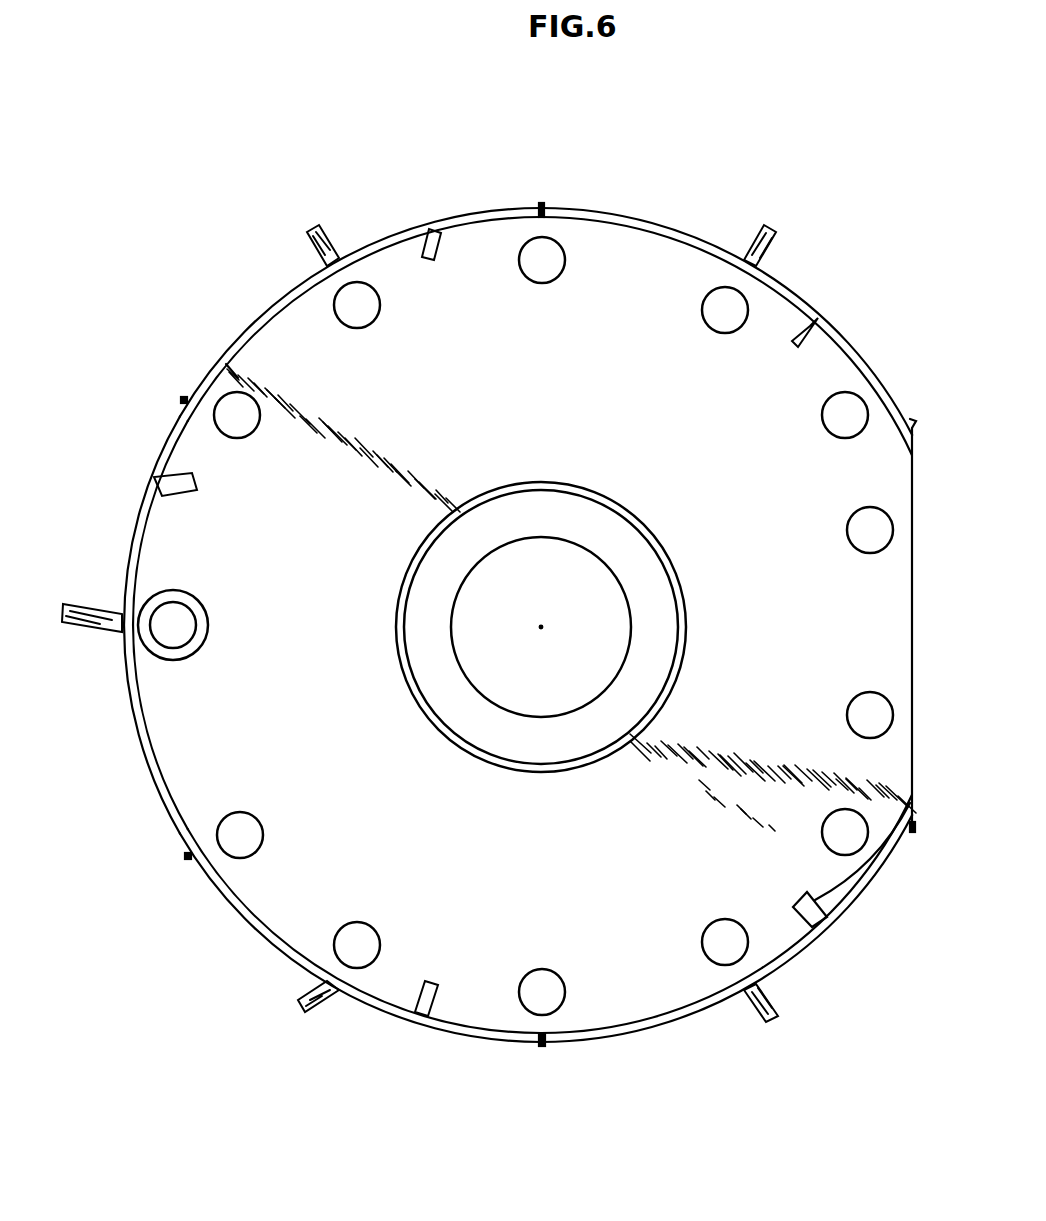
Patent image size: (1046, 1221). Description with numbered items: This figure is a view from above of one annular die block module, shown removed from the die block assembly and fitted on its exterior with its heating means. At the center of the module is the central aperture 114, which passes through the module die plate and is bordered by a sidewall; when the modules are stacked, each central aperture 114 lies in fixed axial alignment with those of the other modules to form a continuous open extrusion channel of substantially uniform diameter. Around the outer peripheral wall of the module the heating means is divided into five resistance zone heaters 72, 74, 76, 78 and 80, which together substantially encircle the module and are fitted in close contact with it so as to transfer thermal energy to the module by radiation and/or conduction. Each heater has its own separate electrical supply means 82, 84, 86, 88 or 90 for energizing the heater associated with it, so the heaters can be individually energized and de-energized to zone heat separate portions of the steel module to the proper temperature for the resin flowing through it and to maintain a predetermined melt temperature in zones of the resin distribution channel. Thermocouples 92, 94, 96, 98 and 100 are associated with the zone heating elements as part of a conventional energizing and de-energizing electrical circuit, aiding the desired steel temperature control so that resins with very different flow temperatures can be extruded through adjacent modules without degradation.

The resistance zone heater 72 is at (710, 1002).
The resistance zone heater 74 is at (240, 913).
The resistance zone heater 76 is at (138, 738).
The rim segment 78 is at (253, 323).
The resistance zone heater 80 is at (693, 232).
The electrical supply means 82 is at (773, 990).
The electrical supply means 84 is at (318, 1000).
The electrical supply means 86 is at (90, 612).
The electrical supply means 88 is at (322, 243).
The electrical supply means 90 is at (770, 248).
The thermocouple 92 is at (912, 800).
The thermocouple 94 is at (437, 993).
The thermocouple 96 is at (197, 500).
The thermocouple 98 is at (440, 245).
The thermocouple 100 is at (811, 346).
The central aperture 114 is at (575, 628).